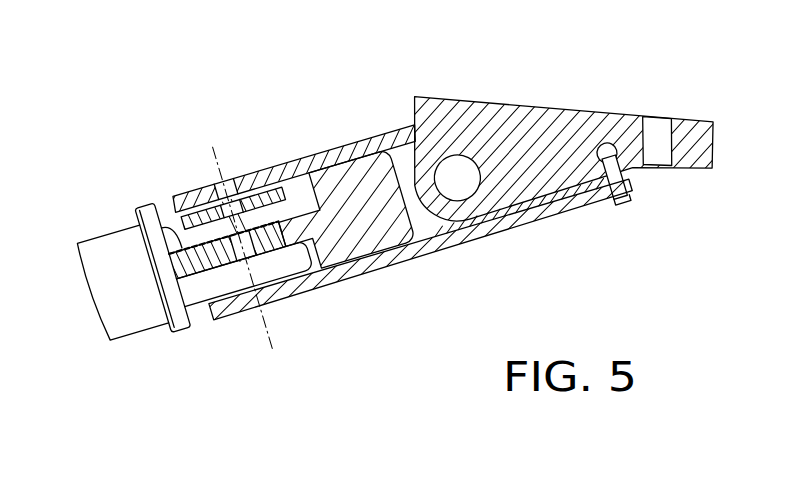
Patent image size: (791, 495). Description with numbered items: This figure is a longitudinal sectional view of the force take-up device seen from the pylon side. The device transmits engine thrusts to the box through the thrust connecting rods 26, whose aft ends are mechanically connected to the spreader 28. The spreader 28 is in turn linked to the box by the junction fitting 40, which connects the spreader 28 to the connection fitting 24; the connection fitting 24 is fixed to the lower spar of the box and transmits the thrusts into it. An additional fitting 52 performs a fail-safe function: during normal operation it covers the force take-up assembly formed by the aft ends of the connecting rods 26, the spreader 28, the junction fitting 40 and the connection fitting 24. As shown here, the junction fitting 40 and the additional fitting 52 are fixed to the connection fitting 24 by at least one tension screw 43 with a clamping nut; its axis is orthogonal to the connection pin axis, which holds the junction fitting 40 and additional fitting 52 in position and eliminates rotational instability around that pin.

The connection fitting 24 is at (531, 103).
The thrust connecting rods 26 is at (133, 345).
The spreader 28 is at (176, 247).
The junction fitting 40 is at (378, 227).
The tension screw 43 is at (622, 207).
The additional fitting 52 is at (296, 160).